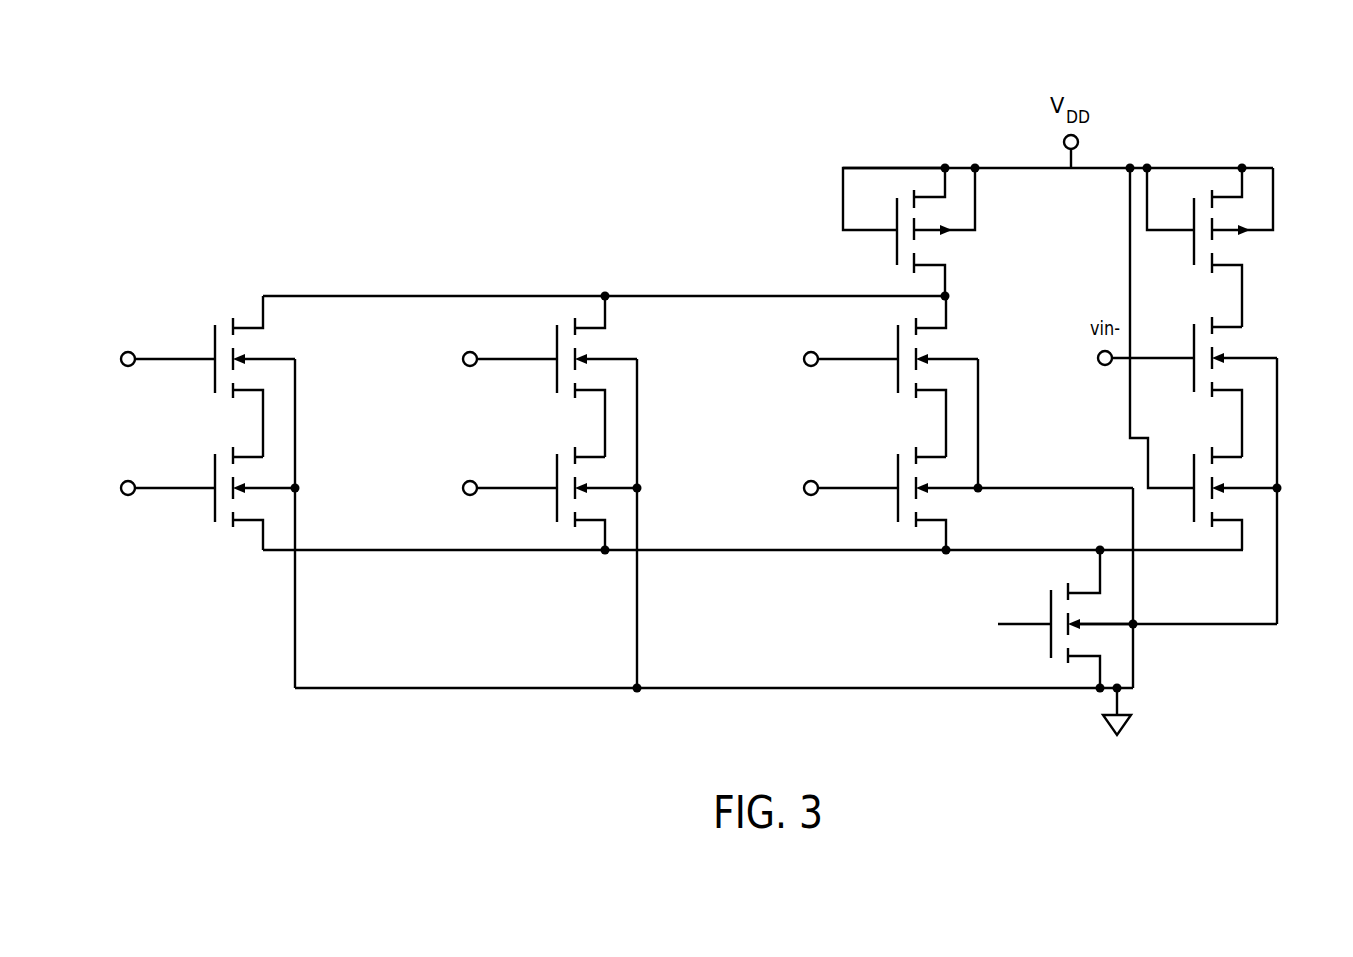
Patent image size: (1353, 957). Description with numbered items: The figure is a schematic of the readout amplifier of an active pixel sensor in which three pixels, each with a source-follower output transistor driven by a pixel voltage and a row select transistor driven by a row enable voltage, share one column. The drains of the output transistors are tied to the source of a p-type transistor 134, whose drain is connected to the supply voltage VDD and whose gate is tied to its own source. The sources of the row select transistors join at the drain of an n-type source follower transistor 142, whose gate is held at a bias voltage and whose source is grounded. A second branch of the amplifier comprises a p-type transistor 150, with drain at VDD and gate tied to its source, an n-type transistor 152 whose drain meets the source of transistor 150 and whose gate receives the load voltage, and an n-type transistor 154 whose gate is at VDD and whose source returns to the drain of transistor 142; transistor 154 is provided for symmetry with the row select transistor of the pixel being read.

The p-type transistor 134 is at (959, 252).
The source follower transistor 142 is at (1124, 598).
The p-type transistor 150 is at (1263, 250).
The n-type transistor 152 is at (1263, 345).
The n-type transistor 154 is at (1263, 470).